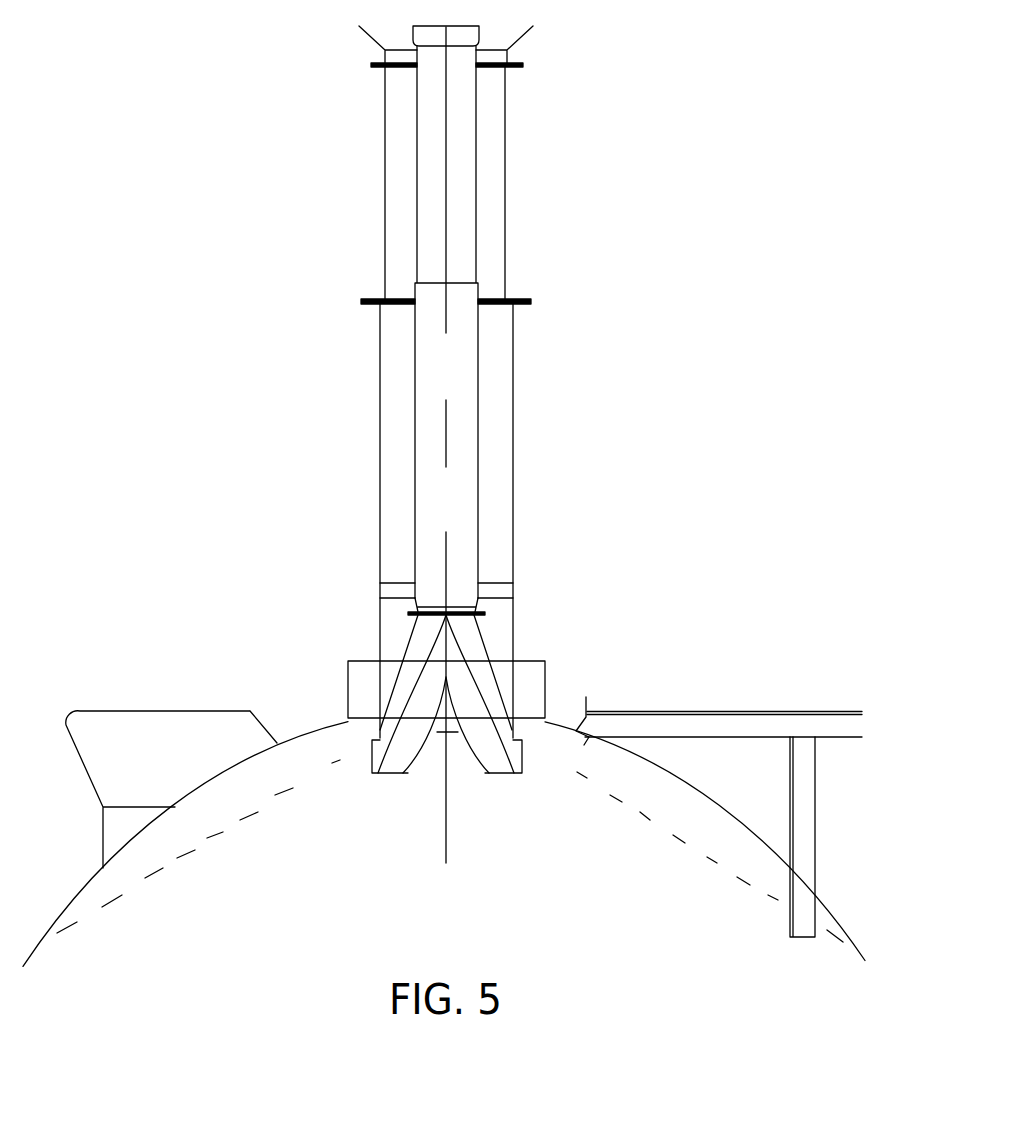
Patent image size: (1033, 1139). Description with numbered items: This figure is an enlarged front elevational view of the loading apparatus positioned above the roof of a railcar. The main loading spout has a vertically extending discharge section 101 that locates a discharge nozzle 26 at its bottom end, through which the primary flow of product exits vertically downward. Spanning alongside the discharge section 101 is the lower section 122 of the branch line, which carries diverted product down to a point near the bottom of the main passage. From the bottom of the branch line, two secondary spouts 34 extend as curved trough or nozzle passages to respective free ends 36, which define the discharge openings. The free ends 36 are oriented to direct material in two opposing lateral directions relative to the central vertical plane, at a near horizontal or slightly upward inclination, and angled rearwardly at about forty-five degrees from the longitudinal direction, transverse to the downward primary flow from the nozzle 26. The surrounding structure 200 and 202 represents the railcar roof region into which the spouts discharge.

The lower section 122 is at (473, 225).
The discharge section 101 is at (513, 368).
The discharge nozzle 26 is at (514, 622).
The secondary spouts 34 is at (425, 697).
The free ends 36 is at (372, 760).
The vessel inner wall 200 is at (647, 817).
The vessel 202 is at (215, 815).